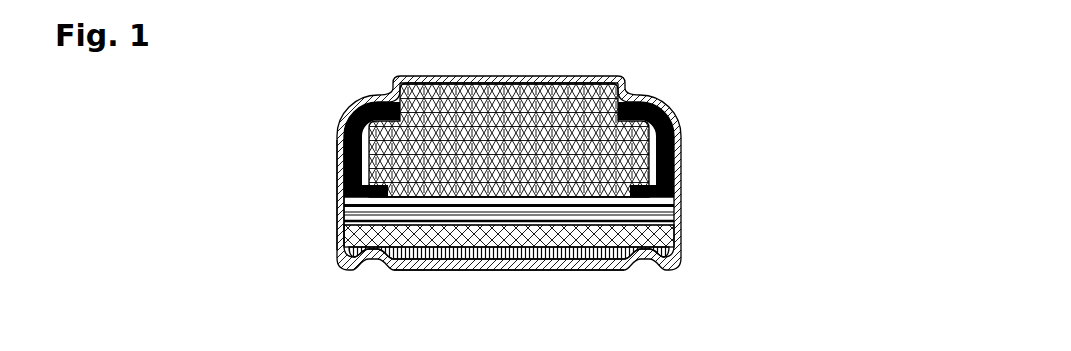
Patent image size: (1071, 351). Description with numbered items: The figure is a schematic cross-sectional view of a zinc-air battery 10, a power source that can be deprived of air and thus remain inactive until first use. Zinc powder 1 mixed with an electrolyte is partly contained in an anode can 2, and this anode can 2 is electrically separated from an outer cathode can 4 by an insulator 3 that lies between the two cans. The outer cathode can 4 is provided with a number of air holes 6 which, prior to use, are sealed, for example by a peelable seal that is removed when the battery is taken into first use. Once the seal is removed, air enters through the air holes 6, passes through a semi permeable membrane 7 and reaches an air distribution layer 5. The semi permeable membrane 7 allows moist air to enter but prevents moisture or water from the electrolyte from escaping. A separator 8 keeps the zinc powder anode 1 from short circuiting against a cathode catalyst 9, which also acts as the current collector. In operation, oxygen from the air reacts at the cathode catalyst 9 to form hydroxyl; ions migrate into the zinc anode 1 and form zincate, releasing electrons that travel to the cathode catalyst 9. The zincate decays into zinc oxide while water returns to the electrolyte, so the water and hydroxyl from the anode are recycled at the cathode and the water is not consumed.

The zinc powder 1 is at (388, 157).
The anode can 2 is at (382, 100).
The insulator 3 is at (360, 185).
The outer cathode can 4 is at (350, 228).
The air distribution layer 5 is at (667, 228).
The air holes 6 is at (417, 271).
The semi permeable membrane 7 is at (664, 253).
The separator 8 is at (667, 198).
The cathode catalyst 9 is at (667, 215).
The container assembly 10 is at (571, 187).